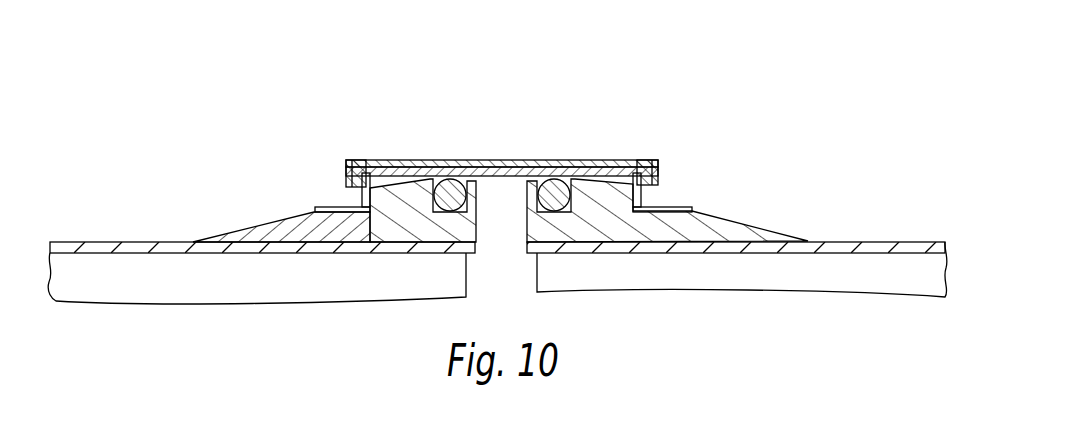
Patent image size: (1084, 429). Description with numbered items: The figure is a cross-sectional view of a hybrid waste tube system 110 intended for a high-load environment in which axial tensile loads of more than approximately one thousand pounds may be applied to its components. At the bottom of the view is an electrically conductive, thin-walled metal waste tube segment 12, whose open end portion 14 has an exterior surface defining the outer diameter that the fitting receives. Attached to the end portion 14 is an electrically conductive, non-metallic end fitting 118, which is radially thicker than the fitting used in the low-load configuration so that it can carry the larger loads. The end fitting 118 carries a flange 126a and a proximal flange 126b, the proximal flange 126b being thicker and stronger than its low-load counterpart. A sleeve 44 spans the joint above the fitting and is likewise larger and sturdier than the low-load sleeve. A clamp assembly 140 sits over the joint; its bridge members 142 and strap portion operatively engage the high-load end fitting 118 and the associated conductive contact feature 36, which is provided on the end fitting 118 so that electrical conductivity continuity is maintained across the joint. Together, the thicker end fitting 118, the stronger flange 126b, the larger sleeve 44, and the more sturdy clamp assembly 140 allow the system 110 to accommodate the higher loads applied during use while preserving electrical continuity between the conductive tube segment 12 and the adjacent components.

The hybrid waste tube system 110 is at (196, 68).
The waste tube segment 12 is at (148, 242).
The end portion 14 is at (224, 290).
The end fitting 118 is at (272, 221).
The bridge member 142 is at (360, 208).
The clamp assembly 140 is at (350, 162).
The sleeve 44 is at (431, 160).
The flange 126a is at (536, 178).
The proximal flange 126b is at (618, 172).
The conductive contact feature 36 is at (677, 210).